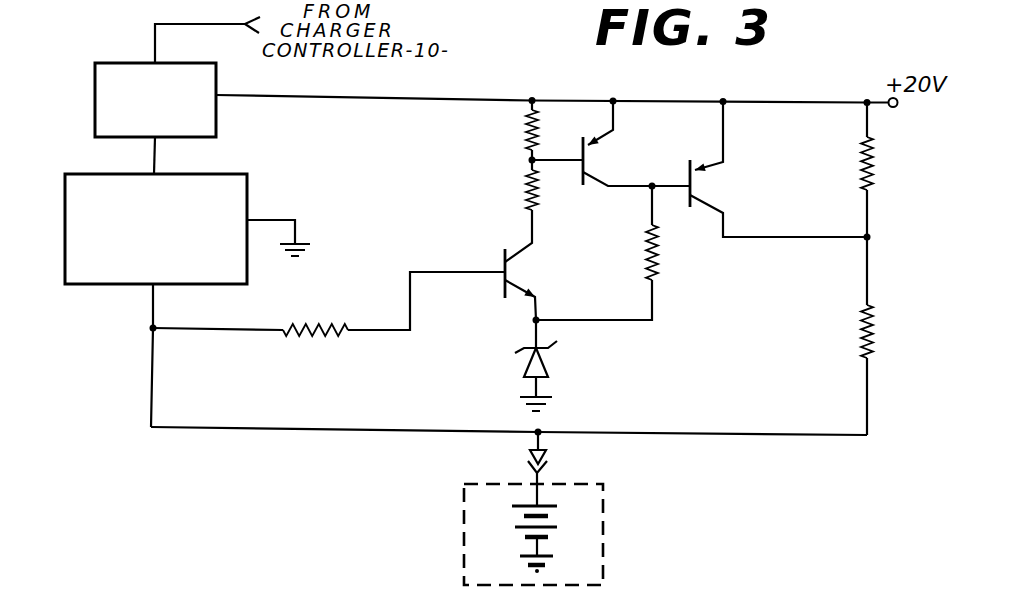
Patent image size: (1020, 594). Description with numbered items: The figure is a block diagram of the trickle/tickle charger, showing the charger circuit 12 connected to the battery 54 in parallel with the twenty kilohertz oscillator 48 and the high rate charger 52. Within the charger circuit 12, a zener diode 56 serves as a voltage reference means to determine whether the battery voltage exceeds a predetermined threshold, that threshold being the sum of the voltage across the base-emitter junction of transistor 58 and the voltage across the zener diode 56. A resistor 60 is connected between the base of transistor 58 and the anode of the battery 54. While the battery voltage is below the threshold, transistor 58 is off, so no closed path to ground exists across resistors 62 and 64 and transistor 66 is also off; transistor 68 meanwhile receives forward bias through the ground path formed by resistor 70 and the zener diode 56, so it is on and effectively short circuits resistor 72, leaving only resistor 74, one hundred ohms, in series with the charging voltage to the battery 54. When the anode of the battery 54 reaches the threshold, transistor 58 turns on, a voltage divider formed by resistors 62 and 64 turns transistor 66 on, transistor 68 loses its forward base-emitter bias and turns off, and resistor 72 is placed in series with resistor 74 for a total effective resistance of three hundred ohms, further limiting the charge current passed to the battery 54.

The charger circuit 12 is at (824, 459).
The 20 KHz oscillator 48 is at (92, 108).
The high rate charger 52 is at (102, 286).
The battery 54 is at (557, 518).
The zener diode 56 is at (514, 378).
The transistor 58 is at (498, 262).
The resistor 60 is at (320, 341).
The resistor 62 is at (544, 148).
The resistor 64 is at (524, 192).
The transistor 66 is at (593, 161).
The transistor 68 is at (682, 160).
The resistor 70 is at (645, 258).
The resistor 72 is at (861, 160).
The resistor 74 is at (861, 330).